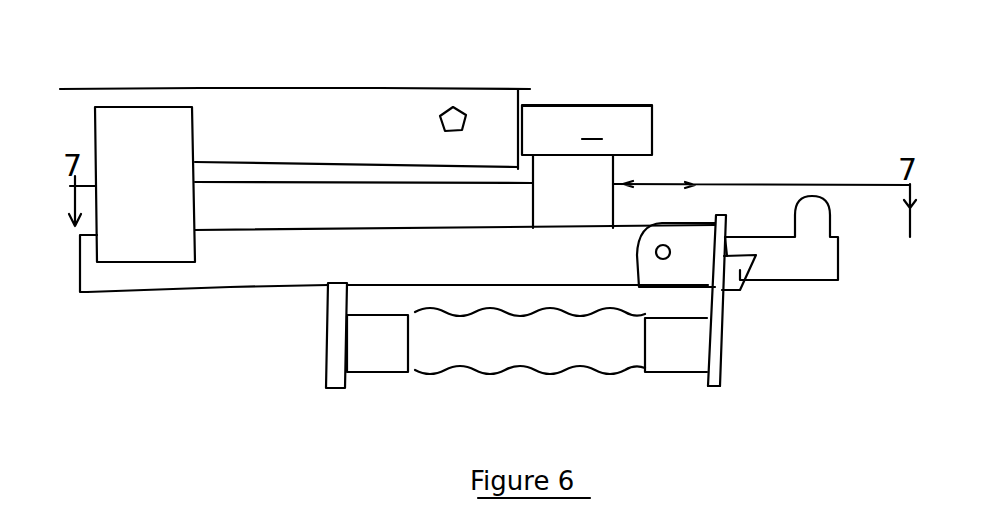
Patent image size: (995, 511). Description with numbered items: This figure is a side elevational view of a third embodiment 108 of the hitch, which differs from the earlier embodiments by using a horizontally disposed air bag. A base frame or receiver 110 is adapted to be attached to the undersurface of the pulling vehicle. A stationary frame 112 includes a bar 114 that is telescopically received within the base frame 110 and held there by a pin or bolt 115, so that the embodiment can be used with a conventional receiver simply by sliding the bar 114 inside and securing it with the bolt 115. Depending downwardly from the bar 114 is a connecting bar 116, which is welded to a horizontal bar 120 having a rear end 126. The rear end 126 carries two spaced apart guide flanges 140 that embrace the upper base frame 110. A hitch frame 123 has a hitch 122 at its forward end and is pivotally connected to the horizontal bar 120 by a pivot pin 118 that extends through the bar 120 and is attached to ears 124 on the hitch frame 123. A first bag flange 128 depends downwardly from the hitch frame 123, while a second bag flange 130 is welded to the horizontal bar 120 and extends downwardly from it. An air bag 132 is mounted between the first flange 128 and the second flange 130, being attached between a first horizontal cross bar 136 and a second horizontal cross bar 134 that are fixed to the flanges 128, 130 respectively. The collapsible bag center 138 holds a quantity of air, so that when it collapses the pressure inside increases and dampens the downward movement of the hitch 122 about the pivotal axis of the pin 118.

The third embodiment 108 is at (402, 55).
The base frame or receiver 110 is at (497, 76).
The stationary frame 112 is at (657, 91).
The bar 114 is at (598, 105).
The pin or bolt 115 is at (440, 120).
The connecting bar 116 is at (582, 198).
The pivot pin 118 is at (655, 250).
The horizontal bar 120 is at (305, 277).
The hitch 122 is at (826, 266).
The hitch frame 123 is at (728, 386).
The ears 124 is at (688, 268).
The rear end 126 is at (100, 284).
The first bag flange 128 is at (716, 338).
The second bag flange 130 is at (322, 376).
The air bag 132 is at (378, 384).
The second horizontal cross bar 134 is at (362, 340).
The first horizontal cross bar 136 is at (660, 373).
The collapsible bag center 138 is at (538, 378).
The guide flanges 140 is at (165, 204).